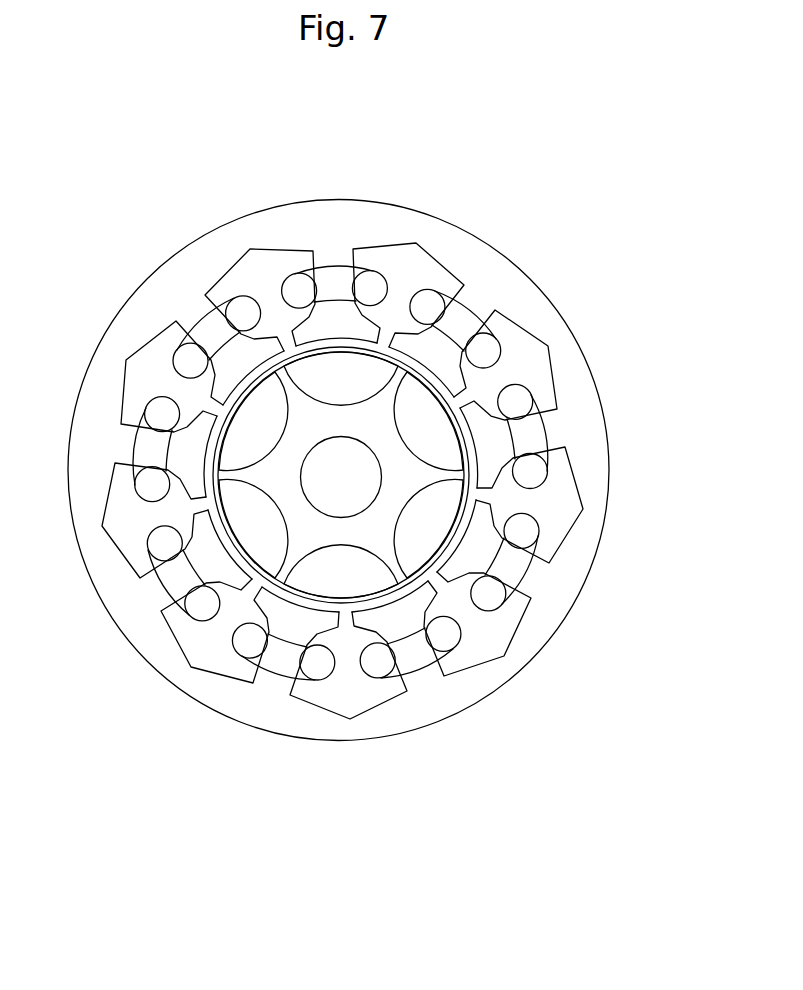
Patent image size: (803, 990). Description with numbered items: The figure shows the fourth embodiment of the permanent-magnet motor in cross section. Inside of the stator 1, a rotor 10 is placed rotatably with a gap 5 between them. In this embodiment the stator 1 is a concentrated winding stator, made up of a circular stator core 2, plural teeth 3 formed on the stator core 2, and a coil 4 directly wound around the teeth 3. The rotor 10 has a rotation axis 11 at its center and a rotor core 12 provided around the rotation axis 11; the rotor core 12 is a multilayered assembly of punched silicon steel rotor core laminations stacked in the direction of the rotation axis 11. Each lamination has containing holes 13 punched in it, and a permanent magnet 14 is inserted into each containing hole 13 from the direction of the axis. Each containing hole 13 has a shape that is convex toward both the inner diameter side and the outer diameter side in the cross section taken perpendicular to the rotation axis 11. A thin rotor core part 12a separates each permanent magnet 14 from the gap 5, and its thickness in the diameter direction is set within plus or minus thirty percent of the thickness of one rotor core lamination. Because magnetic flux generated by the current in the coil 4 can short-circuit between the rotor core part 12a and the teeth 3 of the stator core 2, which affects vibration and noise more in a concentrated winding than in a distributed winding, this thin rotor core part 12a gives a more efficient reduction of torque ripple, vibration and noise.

The stator 1 is at (480, 243).
The stator core 2 is at (553, 311).
The teeth 3 is at (500, 443).
The coil 4 is at (545, 529).
The gap 5 is at (497, 569).
The rotor 10 is at (364, 338).
The rotation axis 11 is at (341, 460).
The rotor core 12 is at (245, 500).
The rotor core part 12a is at (322, 600).
The containing hole 13 is at (267, 555).
The permanent magnet 14 is at (250, 573).